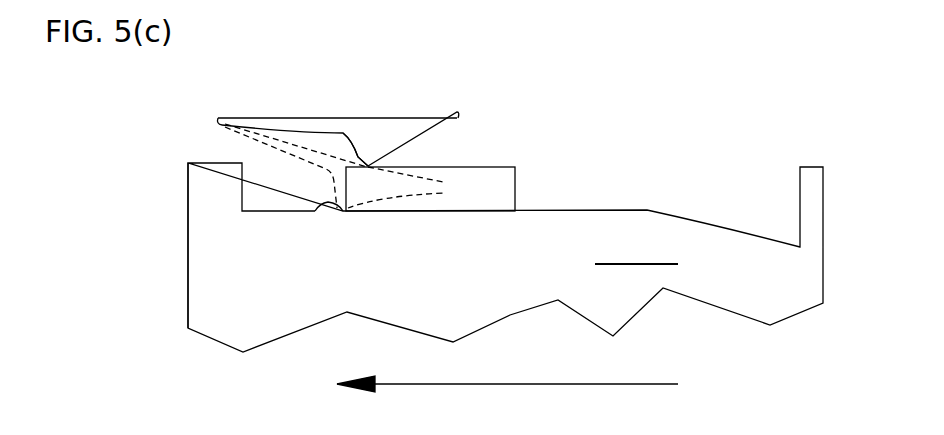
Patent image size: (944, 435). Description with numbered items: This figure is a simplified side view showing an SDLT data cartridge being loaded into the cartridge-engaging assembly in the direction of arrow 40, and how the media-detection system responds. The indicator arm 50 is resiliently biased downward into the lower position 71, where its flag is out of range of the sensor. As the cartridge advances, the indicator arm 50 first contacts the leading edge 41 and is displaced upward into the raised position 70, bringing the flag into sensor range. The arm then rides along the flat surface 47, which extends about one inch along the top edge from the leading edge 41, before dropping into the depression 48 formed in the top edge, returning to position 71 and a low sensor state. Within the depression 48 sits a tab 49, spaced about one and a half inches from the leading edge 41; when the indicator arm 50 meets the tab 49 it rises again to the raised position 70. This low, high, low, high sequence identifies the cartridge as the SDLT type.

The leading edge 41 is at (188, 212).
The flat surface 47 is at (217, 163).
The depression 48 is at (319, 210).
The tab 49 is at (380, 164).
The indicator arm 50 is at (375, 122).
The raised position 70 is at (458, 113).
The lower position 71 is at (443, 182).
The arrow 40 is at (565, 384).